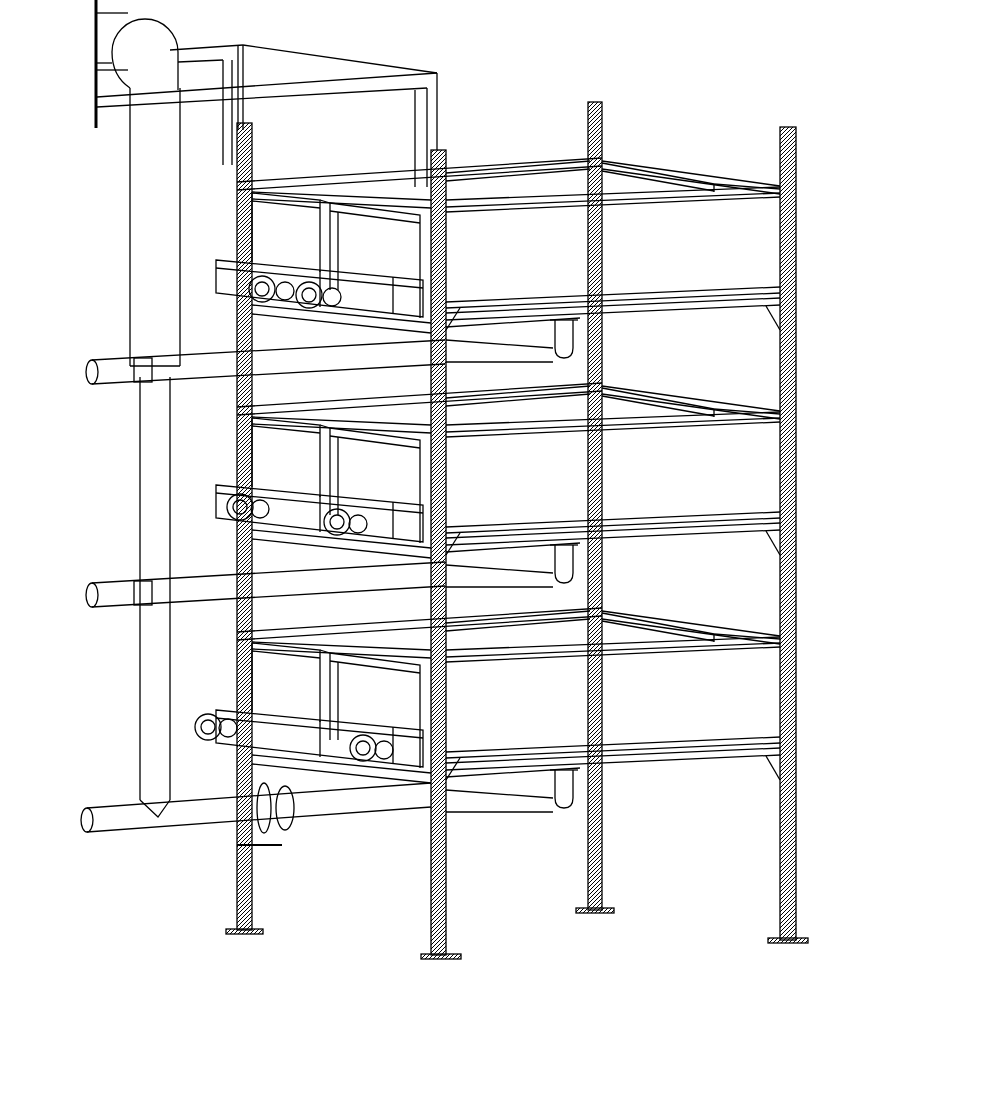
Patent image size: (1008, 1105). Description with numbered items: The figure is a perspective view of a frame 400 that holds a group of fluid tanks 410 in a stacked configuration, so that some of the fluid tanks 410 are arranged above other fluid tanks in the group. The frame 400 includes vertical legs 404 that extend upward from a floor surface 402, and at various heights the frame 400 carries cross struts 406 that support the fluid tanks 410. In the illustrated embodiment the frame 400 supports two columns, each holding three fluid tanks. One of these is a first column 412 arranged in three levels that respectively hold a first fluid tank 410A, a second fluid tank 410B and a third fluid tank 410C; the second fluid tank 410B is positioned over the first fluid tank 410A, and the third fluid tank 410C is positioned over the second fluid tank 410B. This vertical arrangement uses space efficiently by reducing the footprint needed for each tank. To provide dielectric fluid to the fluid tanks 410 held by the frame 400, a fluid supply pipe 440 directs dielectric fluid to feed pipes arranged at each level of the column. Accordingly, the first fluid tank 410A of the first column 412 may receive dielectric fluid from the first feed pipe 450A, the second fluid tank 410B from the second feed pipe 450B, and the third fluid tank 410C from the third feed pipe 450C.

The frame 400 is at (814, 364).
The floor surface 402 is at (390, 970).
The vertical legs 404 is at (445, 855).
The cross struts 406 is at (640, 307).
The fluid tanks 410 is at (303, 248).
The first fluid tank 410A is at (633, 720).
The second fluid tank 410B is at (633, 478).
The third fluid tank 410C is at (633, 270).
The first column 412 is at (816, 187).
The fluid supply pipe 440 is at (143, 240).
The first feed pipe 450A is at (188, 810).
The second feed pipe 450B is at (202, 592).
The third feed pipe 450C is at (198, 367).